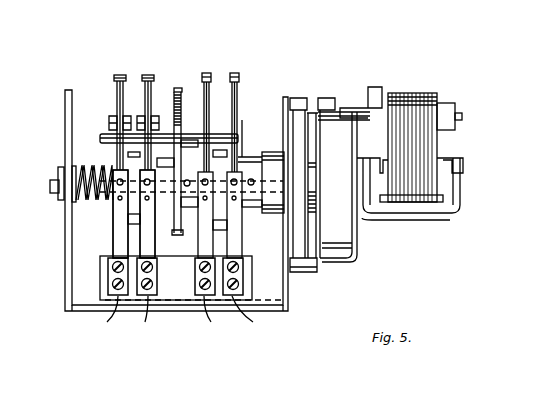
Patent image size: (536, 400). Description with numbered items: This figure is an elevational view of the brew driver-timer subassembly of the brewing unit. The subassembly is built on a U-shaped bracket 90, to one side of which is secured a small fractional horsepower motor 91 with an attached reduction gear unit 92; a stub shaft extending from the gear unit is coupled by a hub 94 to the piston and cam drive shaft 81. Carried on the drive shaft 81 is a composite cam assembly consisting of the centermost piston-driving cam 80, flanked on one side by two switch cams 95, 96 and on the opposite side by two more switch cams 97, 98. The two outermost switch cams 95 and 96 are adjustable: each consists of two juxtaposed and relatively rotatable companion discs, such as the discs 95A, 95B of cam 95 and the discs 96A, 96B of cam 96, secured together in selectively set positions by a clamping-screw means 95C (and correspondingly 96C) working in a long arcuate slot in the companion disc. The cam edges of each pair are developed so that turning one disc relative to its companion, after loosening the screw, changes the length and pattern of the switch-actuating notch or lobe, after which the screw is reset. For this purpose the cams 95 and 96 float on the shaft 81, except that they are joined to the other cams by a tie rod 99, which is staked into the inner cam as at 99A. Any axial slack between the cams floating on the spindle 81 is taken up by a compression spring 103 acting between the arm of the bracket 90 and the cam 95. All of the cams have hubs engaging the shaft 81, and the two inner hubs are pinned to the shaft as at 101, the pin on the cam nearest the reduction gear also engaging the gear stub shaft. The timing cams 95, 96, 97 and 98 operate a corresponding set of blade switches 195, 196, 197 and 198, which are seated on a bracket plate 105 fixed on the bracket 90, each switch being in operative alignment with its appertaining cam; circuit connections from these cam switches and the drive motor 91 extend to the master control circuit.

The piston-driving cam 80 is at (178, 88).
The piston and cam drive shaft 81 is at (50, 186).
The U-shaped bracket 90 is at (68, 114).
The fractional horsepower motor 91 is at (408, 92).
The reduction gear unit 92 is at (341, 120).
The hub 94 is at (271, 147).
The switch cam 95 is at (104, 90).
The companion disc 95A is at (115, 78).
The companion disc 95B is at (121, 76).
The clamping screw 95C is at (108, 122).
The switch cam 96 is at (162, 37).
The companion disc of cam 96 96A is at (146, 78).
The rod cap 96B is at (152, 77).
The lock nut 96C is at (156, 118).
The switch cam 97 is at (210, 56).
The switch cam 98 is at (242, 56).
The tie rod 99 is at (103, 140).
The staked end of tie rod 99A is at (243, 138).
The pin 101 is at (205, 178).
The compression spring 103 is at (92, 203).
The bracket plate 105 is at (282, 308).
The blade switch 195 is at (119, 225).
The blade switch 196 is at (146, 248).
The blade switch 197 is at (204, 236).
The blade switch 198 is at (236, 234).